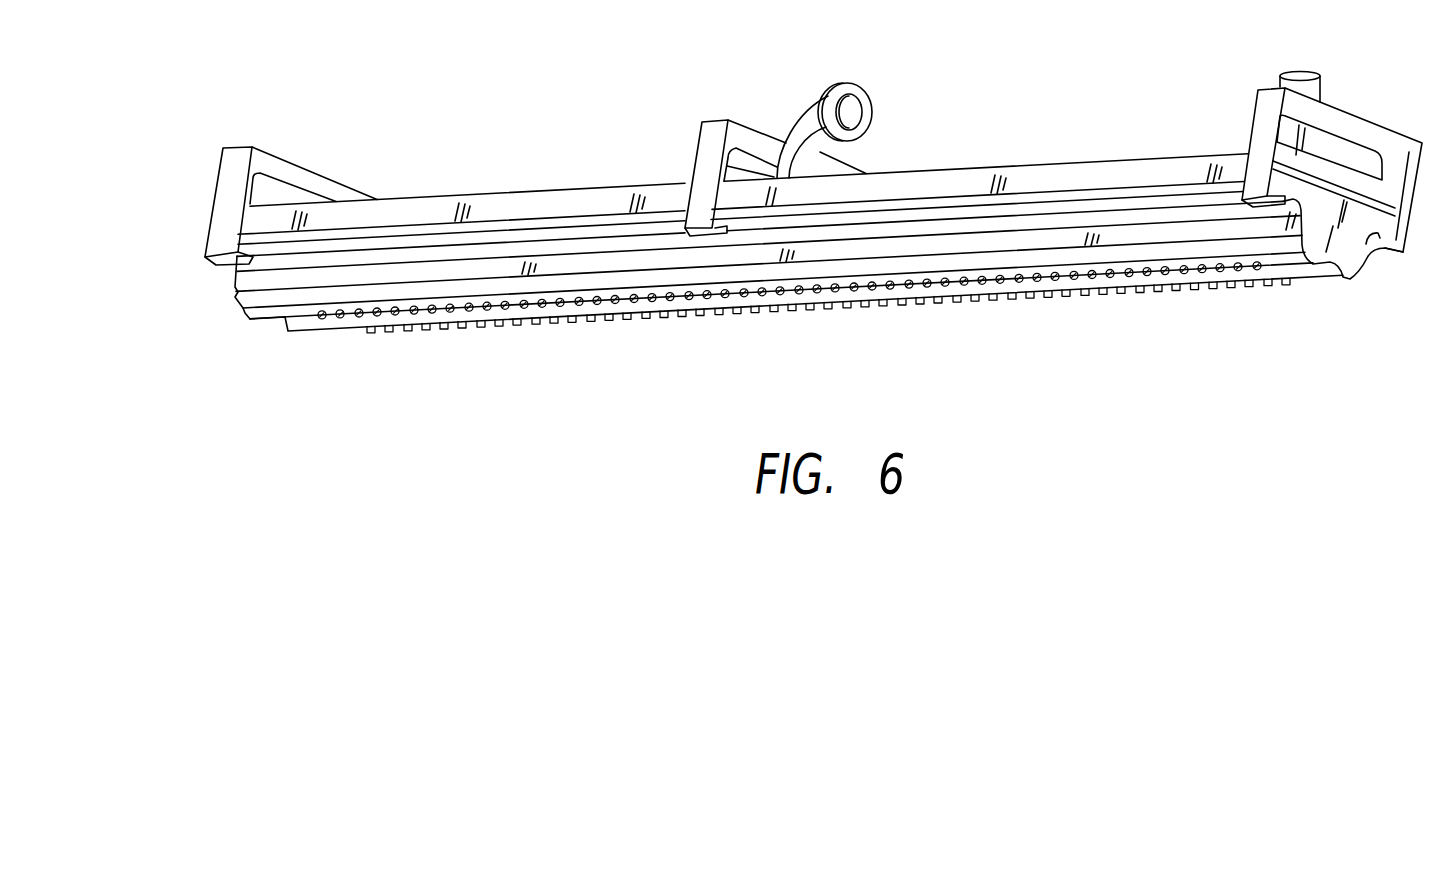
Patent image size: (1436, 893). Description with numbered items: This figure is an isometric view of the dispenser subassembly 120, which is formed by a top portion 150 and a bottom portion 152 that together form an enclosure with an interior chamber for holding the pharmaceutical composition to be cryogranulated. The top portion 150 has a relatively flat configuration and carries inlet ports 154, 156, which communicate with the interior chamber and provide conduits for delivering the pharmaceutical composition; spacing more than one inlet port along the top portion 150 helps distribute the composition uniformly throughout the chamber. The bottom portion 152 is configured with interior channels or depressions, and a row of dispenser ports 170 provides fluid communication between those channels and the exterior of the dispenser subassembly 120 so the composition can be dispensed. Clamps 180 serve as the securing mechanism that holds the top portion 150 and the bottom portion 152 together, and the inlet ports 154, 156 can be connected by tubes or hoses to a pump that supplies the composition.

The dispenser subassembly 120 is at (1034, 76).
The top portion 150 is at (573, 188).
The bottom portion 152 is at (250, 322).
The inlet port 154 is at (858, 83).
The inlet port 156 is at (1312, 72).
The dispenser ports 170 is at (672, 297).
The clamps 180 is at (247, 146).